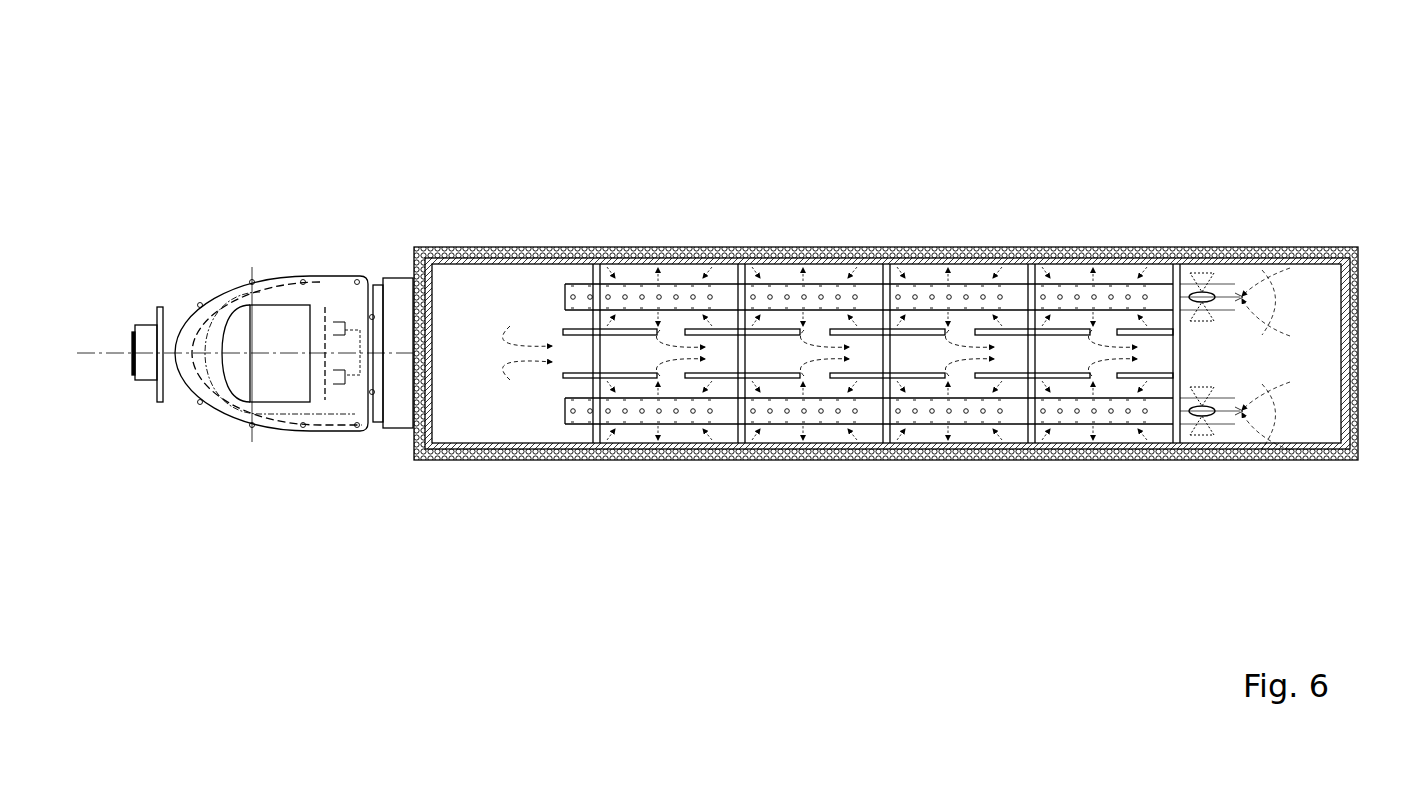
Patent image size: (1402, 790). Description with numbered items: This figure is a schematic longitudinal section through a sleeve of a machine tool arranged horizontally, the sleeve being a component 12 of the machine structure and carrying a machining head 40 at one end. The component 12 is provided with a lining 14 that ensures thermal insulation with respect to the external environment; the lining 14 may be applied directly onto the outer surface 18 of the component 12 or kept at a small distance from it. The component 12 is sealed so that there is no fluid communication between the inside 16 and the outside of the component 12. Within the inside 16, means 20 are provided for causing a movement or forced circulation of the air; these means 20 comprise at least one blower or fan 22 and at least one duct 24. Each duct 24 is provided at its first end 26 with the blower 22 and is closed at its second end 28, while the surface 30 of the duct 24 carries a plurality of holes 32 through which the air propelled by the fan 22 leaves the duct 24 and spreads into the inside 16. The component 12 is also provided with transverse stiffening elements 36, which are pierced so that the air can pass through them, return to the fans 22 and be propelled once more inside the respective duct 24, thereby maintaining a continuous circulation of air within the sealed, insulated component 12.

The component of machine tool 12 is at (886, 251).
The lining 14 is at (846, 247).
The inside of the component 16 is at (478, 351).
The outer surface of the component 18 is at (966, 262).
The means for forced air circulation 20 is at (1157, 283).
The blower or fan 22 is at (1207, 272).
The duct 24 is at (793, 338).
The first end of the duct 26 is at (1246, 297).
The second end of the duct 28 is at (565, 299).
The surface of the duct 30 is at (1063, 285).
The holes 32 is at (768, 295).
The transverse stiffening elements 36 is at (597, 433).
The machining head 40 is at (283, 264).